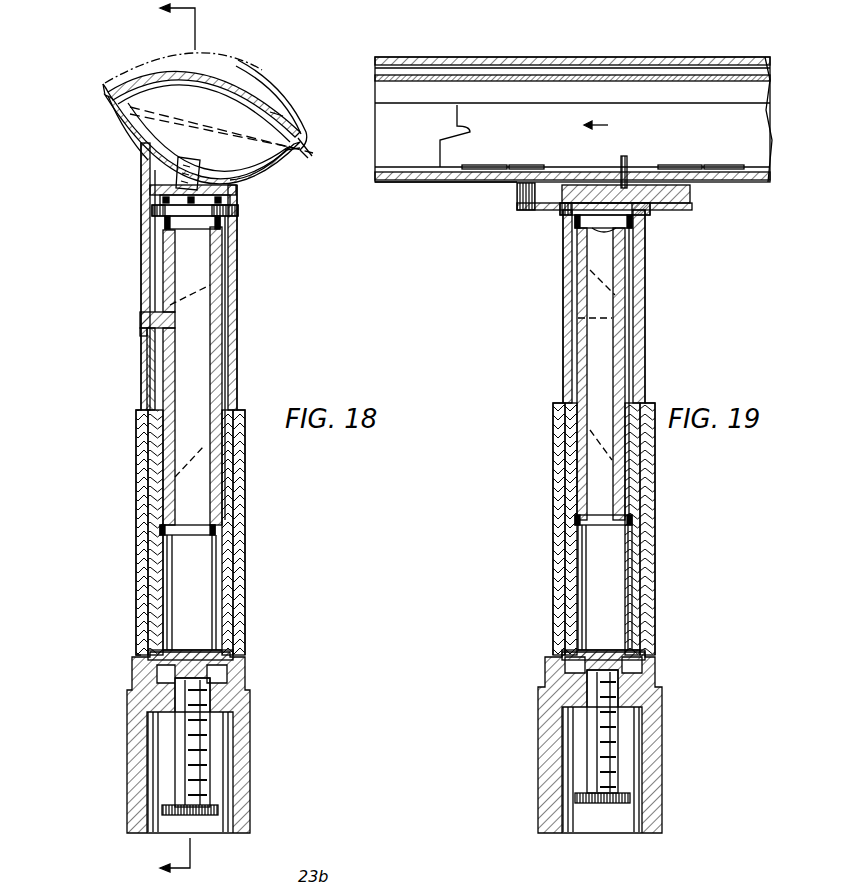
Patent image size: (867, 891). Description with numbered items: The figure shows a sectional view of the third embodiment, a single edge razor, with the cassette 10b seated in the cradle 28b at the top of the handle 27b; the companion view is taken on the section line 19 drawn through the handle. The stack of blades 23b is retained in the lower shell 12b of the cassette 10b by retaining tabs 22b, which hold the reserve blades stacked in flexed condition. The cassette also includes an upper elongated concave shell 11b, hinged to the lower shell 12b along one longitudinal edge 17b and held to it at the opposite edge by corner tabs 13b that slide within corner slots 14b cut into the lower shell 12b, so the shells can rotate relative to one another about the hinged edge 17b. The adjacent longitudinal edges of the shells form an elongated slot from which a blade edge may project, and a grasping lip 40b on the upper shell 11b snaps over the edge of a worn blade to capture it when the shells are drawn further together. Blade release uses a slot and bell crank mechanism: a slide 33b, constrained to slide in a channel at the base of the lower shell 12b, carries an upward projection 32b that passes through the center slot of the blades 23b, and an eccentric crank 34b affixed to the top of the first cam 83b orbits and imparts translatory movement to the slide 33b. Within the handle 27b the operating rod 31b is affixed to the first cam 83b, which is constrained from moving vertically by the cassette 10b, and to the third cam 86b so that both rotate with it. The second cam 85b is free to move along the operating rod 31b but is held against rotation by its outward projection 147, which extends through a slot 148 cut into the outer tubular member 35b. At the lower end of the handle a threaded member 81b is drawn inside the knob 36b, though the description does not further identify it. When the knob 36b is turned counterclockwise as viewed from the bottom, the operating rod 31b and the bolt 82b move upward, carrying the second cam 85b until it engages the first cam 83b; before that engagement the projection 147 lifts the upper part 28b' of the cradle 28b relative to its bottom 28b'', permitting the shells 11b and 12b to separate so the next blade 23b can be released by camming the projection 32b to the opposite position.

In FIG. 18, the cassette 10b is at (296, 105).
In FIG. 19, the cassette 10b is at (352, 155).
In FIG. 18, the upper shell 11b is at (283, 118).
In FIG. 19, the upper shell 11b is at (378, 78).
In FIG. 18, the lower shell 12b is at (255, 172).
In FIG. 19, the lower shell 12b is at (378, 182).
In FIG. 18, the corner tabs 13b is at (270, 112).
In FIG. 18, the corner slots 14b is at (290, 150).
In FIG. 18, the hinged longitudinal edge 17b is at (130, 112).
In FIG. 18, the section line 19— 19 is at (161, 439).
In FIG. 19, the retaining tabs 22b is at (475, 166).
In FIG. 18, the blades 23b is at (197, 120).
In FIG. 19, the blades 23b is at (440, 162).
In FIG. 18, the handle 27b is at (262, 481).
In FIG. 19, the handle 27b is at (533, 552).
In FIG. 18, the cradle 28b is at (75, 94).
In FIG. 19, the cradle 28b is at (446, 203).
In FIG. 18, the upper part of cradle 28b' is at (204, 84).
In FIG. 18, the bottom of cradle 28b'' is at (113, 139).
In FIG. 19, the bottom of cradle 28b'' is at (590, 213).
In FIG. 18, the operating rod 31b is at (215, 312).
In FIG. 19, the operating rod 31b is at (614, 310).
In FIG. 18, the upward projection 32b is at (184, 157).
In FIG. 19, the upward projection 32b is at (627, 158).
In FIG. 18, the slide 33b is at (238, 202).
In FIG. 19, the slide 33b is at (692, 200).
In FIG. 18, the eccentric crank 34b is at (228, 236).
In FIG. 19, the eccentric crank 34b is at (648, 216).
In FIG. 18, the outer tubular member 35b is at (150, 267).
In FIG. 19, the outer tubular member 35b is at (567, 350).
In FIG. 18, the knob 36b is at (250, 783).
In FIG. 19, the knob 36b is at (662, 770).
In FIG. 18, the grasping lip 40b is at (300, 137).
In FIG. 18, the adjusting screw 81b is at (205, 748).
In FIG. 19, the adjusting screw 81b is at (602, 728).
In FIG. 18, the bolt 82b is at (228, 356).
In FIG. 19, the bolt 82b is at (640, 345).
In FIG. 18, the first cam 83b is at (162, 248).
In FIG. 19, the first cam 83b is at (634, 268).
In FIG. 18, the second cam 85b is at (163, 357).
In FIG. 19, the second cam 85b is at (578, 298).
In FIG. 18, the third cam 86b is at (163, 498).
In FIG. 19, the third cam 86b is at (580, 470).
In FIG. 18, the outward projection 147 is at (140, 322).
In FIG. 18, the slot 148 is at (150, 300).